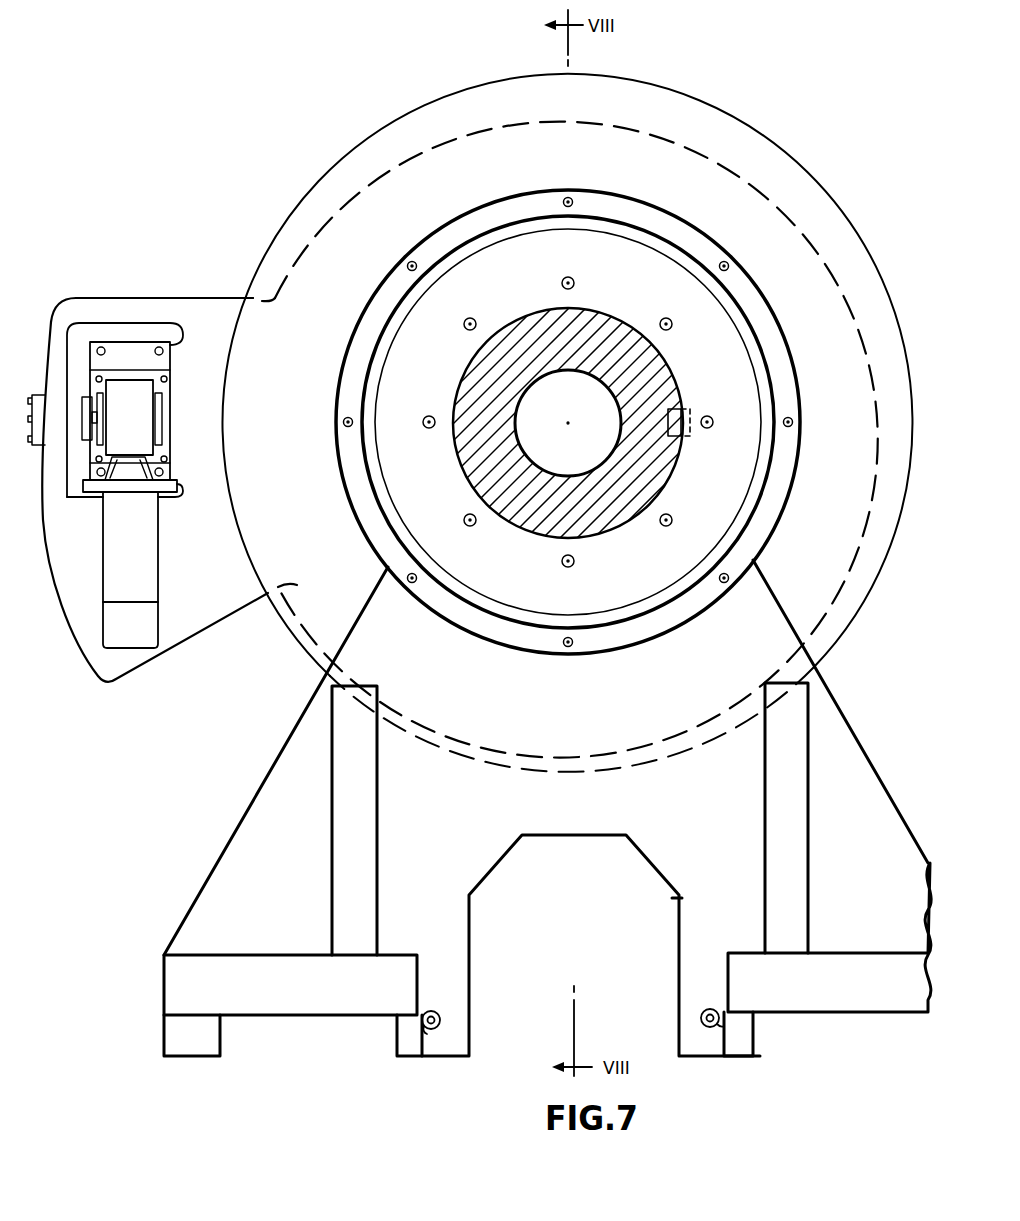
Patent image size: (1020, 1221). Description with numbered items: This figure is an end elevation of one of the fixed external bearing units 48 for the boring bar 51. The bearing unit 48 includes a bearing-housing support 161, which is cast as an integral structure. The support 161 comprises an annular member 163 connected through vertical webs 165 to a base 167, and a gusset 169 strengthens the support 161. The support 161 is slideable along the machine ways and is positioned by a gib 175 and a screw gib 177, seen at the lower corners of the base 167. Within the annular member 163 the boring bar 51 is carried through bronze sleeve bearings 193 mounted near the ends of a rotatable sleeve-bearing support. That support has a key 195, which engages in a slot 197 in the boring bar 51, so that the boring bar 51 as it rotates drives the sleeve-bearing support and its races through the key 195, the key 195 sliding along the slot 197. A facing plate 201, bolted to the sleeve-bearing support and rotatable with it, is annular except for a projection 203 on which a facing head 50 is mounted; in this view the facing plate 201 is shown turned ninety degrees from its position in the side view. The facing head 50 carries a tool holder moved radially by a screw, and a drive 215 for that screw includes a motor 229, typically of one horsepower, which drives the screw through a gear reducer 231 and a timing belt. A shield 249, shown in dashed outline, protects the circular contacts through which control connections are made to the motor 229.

The external bearing unit 48 is at (738, 93).
The facing head 50 is at (126, 287).
The boring bar 51 is at (613, 462).
The bearing-housing support 161 is at (655, 968).
The annular member 163 is at (785, 424).
The vertical webs 165 is at (233, 835).
The base 167 is at (170, 997).
The gusset 169 is at (369, 779).
The gib 175 is at (400, 1059).
The screw gib 177 is at (436, 1010).
The sleeve bearings 193 is at (752, 481).
The key 195 is at (679, 440).
The slot 197 is at (685, 410).
The facing plate 201 is at (294, 234).
The projection 203 is at (219, 298).
The drive 215 is at (212, 416).
The motor 229 is at (148, 538).
The gear reducer 231 is at (150, 416).
The shield 249 is at (319, 188).